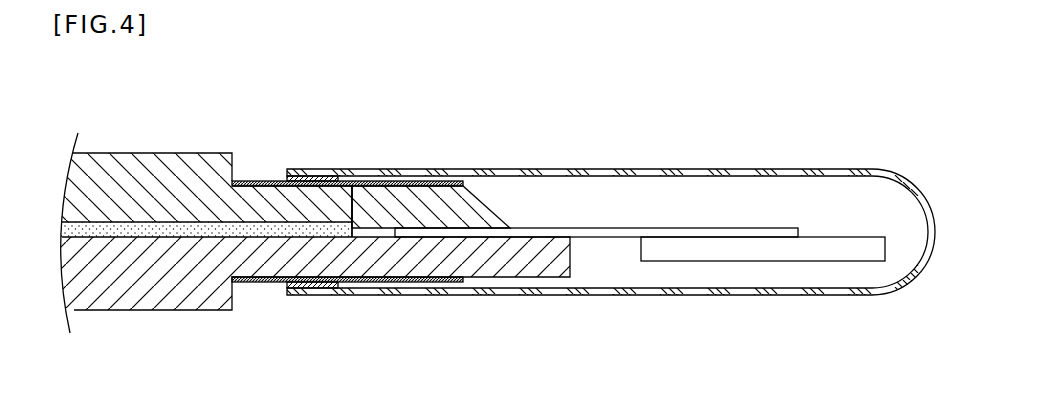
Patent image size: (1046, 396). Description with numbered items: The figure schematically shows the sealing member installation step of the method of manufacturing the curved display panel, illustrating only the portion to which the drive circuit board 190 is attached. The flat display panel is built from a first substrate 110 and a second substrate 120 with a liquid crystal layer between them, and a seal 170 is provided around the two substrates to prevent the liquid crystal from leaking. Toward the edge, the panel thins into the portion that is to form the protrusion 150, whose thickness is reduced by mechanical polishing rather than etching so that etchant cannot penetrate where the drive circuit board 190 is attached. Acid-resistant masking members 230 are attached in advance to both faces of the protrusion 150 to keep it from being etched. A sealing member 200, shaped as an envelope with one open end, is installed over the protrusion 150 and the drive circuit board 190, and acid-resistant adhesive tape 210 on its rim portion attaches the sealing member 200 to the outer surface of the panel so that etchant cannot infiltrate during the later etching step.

The first substrate 110 is at (145, 305).
The second substrate 120 is at (157, 173).
The protrusion 150 is at (298, 205).
The seal 170 is at (457, 208).
The drive circuit board 190 is at (702, 247).
The sealing member 200 is at (727, 172).
The acid-resistant adhesive tape 210 is at (333, 177).
The masking member 230 is at (253, 181).